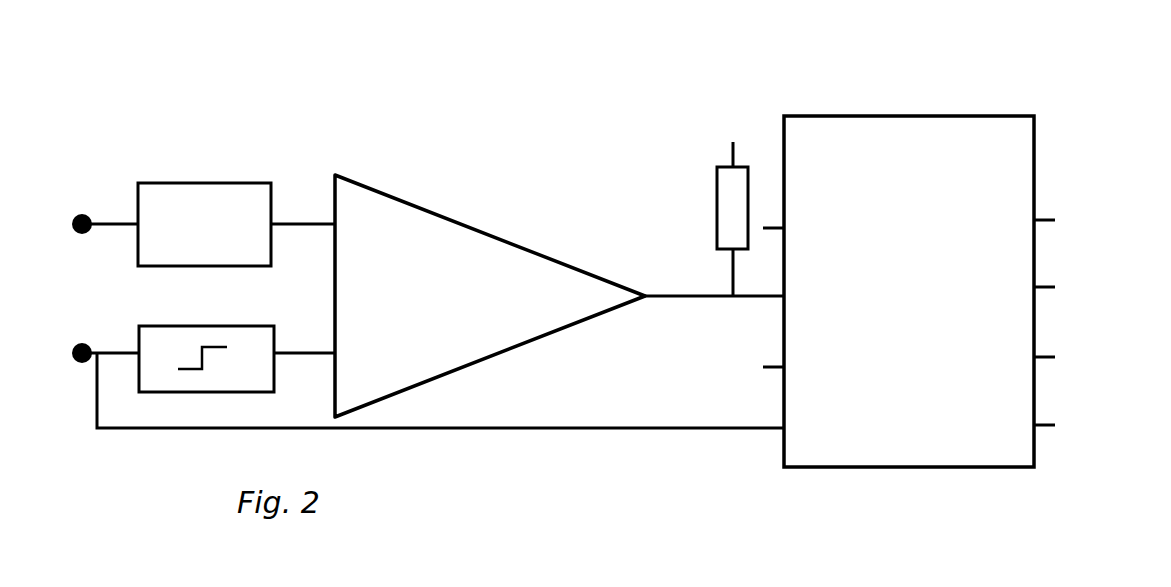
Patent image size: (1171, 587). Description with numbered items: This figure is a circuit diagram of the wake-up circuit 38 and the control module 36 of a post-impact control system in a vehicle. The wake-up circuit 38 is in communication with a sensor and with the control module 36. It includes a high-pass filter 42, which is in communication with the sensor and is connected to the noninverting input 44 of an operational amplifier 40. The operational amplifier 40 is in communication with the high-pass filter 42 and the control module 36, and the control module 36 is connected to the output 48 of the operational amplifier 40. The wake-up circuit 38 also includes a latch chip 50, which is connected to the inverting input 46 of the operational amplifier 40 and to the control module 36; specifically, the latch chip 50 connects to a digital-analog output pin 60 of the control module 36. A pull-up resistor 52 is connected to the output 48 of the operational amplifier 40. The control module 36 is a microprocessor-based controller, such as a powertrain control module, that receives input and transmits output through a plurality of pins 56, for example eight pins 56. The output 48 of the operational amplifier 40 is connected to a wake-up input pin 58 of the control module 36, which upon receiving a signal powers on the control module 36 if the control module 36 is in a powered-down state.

The control module 36 is at (895, 113).
The wake-up circuit 38 is at (282, 103).
The operational amplifier 40 is at (422, 205).
The high-pass filter 42 is at (168, 181).
The noninverting input 44 is at (333, 218).
The inverting input 46 is at (333, 351).
The output 48 is at (647, 293).
The latch chip 50 is at (160, 322).
The pull-up resistor 52 is at (715, 195).
The pins 56 is at (1042, 225).
The wake-up input pin 58 is at (780, 302).
The digital-analog output pin 60 is at (780, 430).